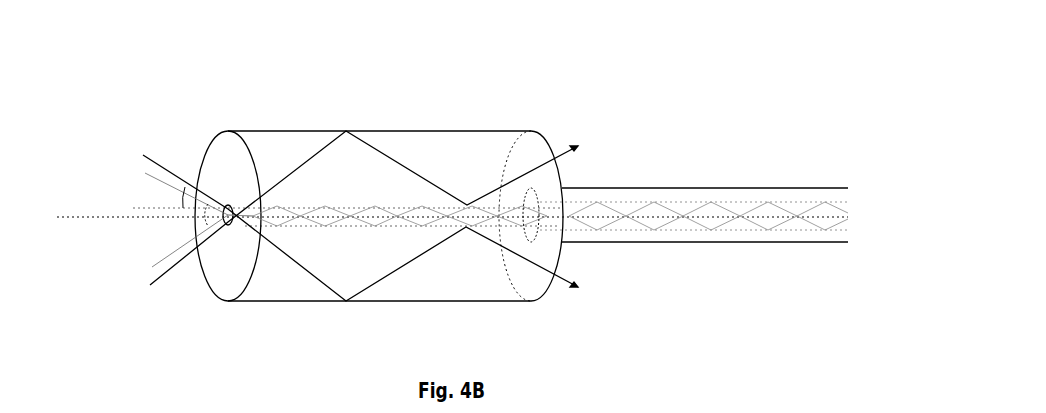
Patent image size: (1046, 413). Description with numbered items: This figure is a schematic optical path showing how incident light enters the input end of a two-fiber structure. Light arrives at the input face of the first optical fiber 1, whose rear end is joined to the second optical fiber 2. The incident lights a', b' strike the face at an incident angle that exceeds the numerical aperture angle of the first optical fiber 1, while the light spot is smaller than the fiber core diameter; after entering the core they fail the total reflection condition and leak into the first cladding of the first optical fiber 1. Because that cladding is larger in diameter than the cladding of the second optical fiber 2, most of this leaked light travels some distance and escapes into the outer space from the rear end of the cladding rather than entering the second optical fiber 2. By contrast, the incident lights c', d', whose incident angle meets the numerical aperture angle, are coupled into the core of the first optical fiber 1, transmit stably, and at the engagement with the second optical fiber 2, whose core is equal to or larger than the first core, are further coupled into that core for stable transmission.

The first optical fiber 1 is at (298, 301).
The second optical fiber 2 is at (682, 242).
The incident light a' is at (360, 223).
The incident light b' is at (364, 217).
The incident light c' is at (182, 194).
The incident light d' is at (184, 241).